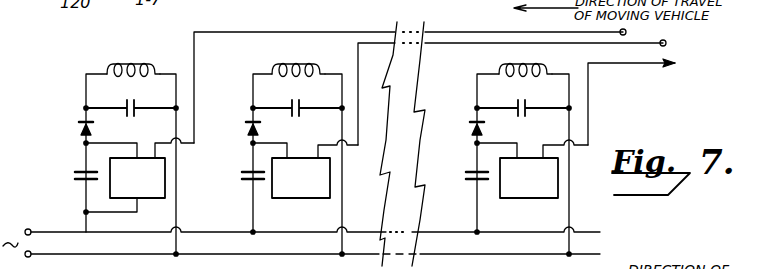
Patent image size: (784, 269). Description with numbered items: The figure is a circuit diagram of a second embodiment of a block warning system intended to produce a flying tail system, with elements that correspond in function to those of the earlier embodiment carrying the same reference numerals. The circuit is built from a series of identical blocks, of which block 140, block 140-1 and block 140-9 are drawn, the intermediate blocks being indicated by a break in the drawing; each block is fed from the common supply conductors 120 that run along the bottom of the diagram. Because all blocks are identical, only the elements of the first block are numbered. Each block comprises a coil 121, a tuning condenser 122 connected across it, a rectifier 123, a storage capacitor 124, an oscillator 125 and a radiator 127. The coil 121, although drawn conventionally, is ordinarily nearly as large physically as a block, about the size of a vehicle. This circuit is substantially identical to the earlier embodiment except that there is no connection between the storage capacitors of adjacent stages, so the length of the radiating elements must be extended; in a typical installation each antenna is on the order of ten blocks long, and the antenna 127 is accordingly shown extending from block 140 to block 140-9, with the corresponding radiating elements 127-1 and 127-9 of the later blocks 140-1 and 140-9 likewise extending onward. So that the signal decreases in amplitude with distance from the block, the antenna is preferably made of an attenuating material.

The supply conductors 120 is at (127, 232).
The coil 121 is at (133, 63).
The tuning condenser 122 is at (131, 117).
The rectifier 123 is at (78, 122).
The storage capacitor 124 is at (78, 180).
The oscillator 125 is at (165, 187).
The radiator 127 is at (332, 31).
The radiating element 127-1 is at (473, 45).
The radiating element 127-9 is at (645, 64).
The block 140 is at (168, 218).
The block 140-1 is at (318, 220).
The block 140-9 is at (543, 220).